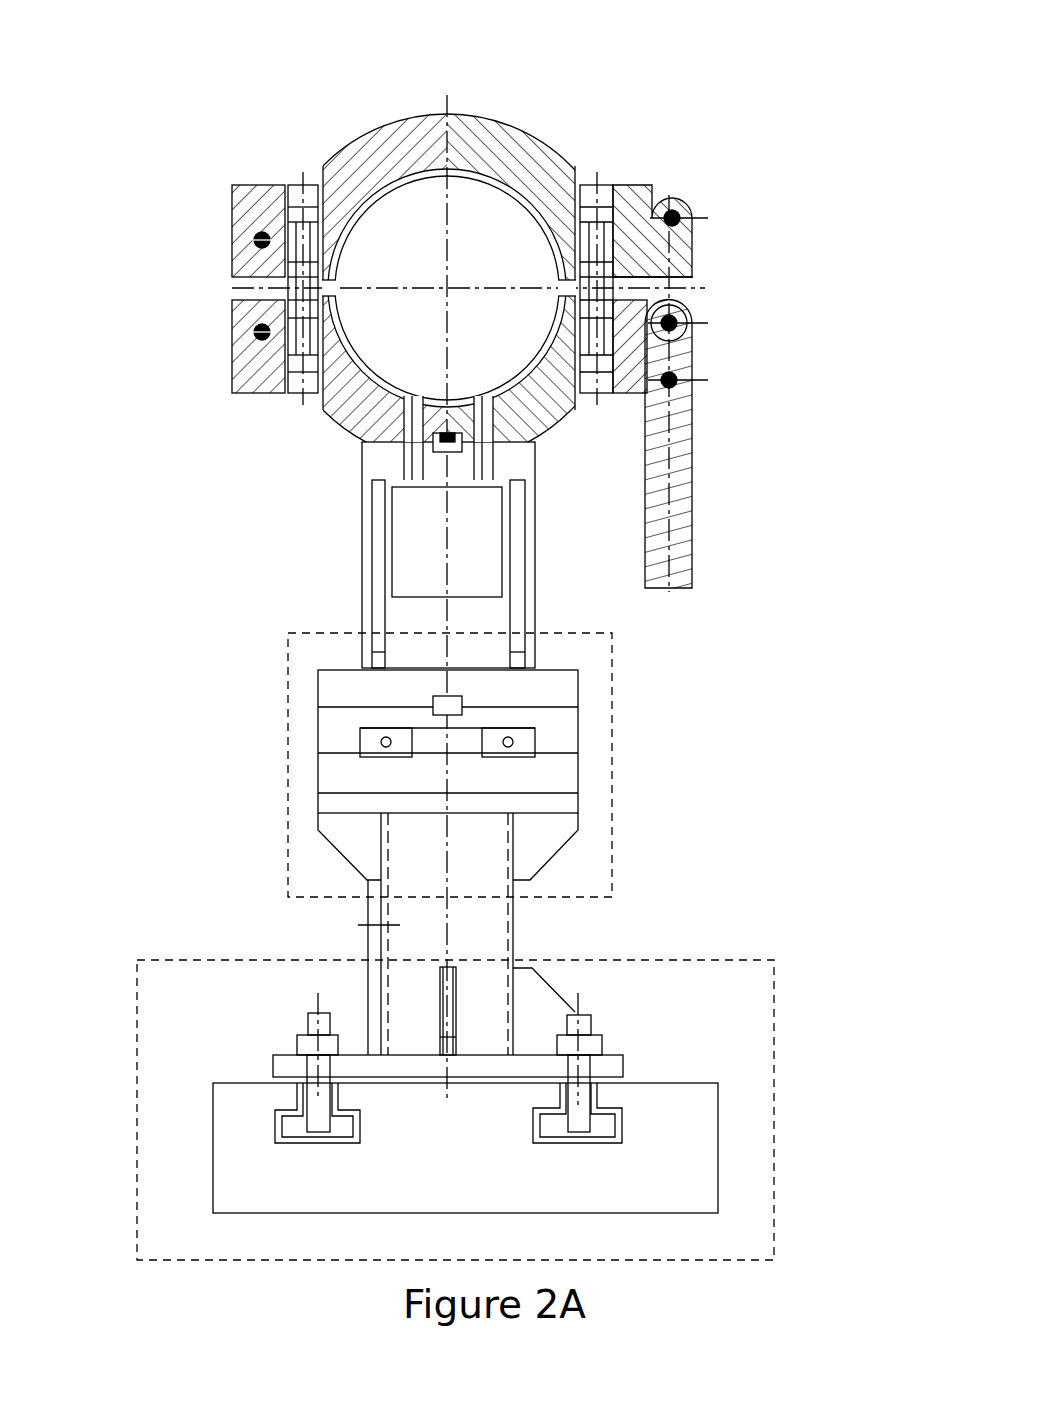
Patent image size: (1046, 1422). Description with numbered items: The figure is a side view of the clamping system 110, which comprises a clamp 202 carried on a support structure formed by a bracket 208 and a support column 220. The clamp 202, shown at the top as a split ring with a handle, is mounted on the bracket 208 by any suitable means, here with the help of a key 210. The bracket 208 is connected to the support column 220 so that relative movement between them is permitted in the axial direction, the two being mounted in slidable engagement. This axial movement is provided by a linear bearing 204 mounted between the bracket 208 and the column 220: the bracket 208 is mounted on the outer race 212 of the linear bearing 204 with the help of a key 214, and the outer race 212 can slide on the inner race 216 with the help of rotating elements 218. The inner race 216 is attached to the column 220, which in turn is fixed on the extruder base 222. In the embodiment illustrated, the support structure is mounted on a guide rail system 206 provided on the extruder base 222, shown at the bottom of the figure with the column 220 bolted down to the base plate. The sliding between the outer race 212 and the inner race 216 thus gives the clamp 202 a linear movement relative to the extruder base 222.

The clamping system 110 is at (458, 633).
The clamp 202 is at (232, 222).
The linear bearing 204 is at (478, 765).
The guide rail system 206 is at (458, 1101).
The bracket 208 is at (362, 532).
The key 210 is at (438, 450).
The outer race 212 is at (578, 733).
The key 214 is at (433, 708).
The inner race 216 is at (578, 783).
The rotating elements 218 is at (360, 748).
The support column 220 is at (500, 948).
The extruder base 222 is at (623, 1057).